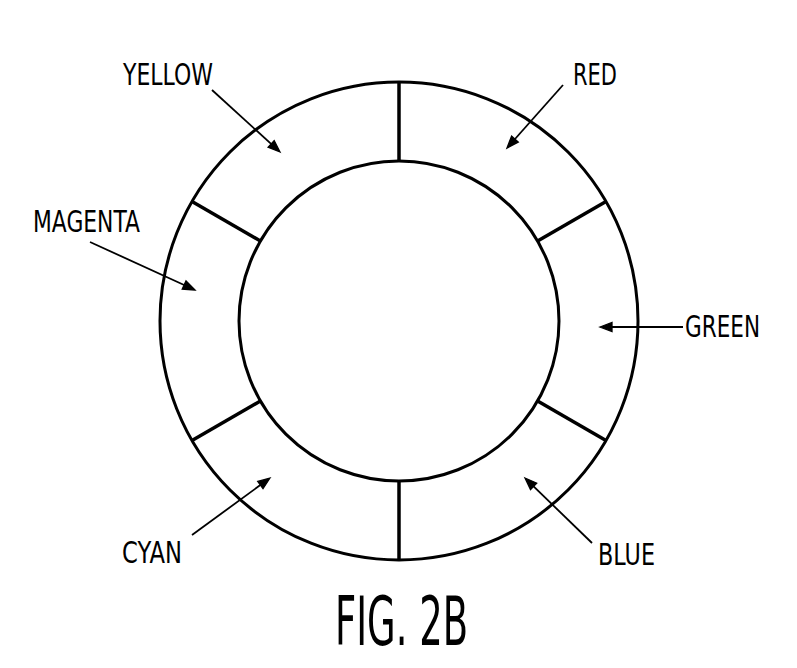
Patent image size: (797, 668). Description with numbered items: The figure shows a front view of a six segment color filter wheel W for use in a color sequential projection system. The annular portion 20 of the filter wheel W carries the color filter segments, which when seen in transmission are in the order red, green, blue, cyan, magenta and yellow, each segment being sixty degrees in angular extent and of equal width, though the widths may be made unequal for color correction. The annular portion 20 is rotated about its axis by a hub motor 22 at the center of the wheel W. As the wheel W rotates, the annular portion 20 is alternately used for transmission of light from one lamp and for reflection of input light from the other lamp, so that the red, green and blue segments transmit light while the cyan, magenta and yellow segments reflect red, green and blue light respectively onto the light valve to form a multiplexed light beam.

The annular portion 20 is at (634, 231).
The hub motor 22 is at (424, 222).
The filter wheel W is at (625, 153).